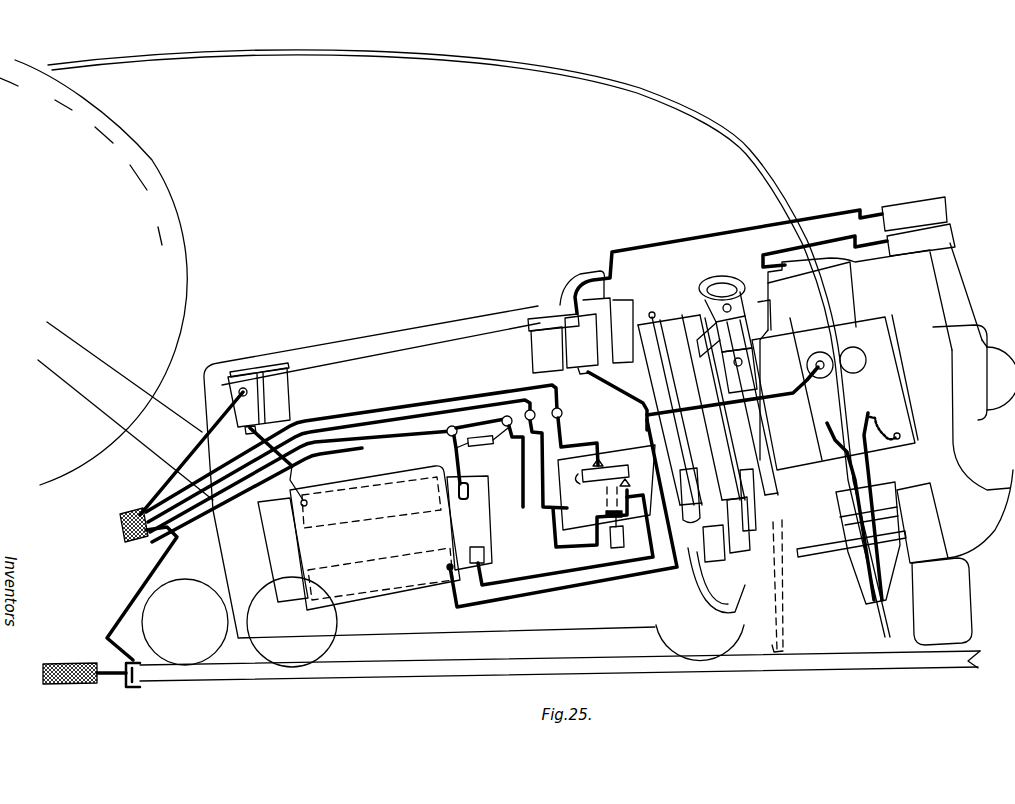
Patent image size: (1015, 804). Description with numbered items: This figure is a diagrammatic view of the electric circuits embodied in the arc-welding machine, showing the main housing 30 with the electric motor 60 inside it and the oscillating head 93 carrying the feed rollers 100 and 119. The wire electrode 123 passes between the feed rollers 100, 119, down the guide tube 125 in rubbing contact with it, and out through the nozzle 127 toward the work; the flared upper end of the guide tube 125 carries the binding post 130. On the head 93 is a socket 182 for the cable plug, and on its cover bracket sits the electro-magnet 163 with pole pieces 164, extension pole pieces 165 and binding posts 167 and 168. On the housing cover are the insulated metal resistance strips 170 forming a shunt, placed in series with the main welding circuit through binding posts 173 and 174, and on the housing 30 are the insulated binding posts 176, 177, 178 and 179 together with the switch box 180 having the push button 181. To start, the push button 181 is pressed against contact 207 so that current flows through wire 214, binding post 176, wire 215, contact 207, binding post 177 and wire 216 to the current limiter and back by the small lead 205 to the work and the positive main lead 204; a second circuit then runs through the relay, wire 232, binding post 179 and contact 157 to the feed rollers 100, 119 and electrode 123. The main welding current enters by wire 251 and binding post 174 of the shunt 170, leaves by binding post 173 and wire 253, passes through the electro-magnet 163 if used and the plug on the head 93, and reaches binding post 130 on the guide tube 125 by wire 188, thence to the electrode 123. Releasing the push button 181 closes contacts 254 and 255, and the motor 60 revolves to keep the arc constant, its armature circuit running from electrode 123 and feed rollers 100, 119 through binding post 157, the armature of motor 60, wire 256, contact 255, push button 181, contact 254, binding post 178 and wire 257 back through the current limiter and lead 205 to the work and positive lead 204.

The main housing 30 is at (550, 628).
The electric motor 60 is at (402, 473).
The oscillating head 93 is at (873, 318).
The feed roller 100 is at (819, 353).
The second serrated grooved roller 119 is at (858, 351).
The wire electrode 123 is at (757, 153).
The guide tube 125 is at (832, 443).
The nozzle 127 is at (845, 513).
The binding post 130 is at (880, 418).
The contact 157 is at (808, 362).
The electro-magnet 163 is at (985, 348).
The pole pieces 164 is at (955, 451).
The extension pole pieces 165 is at (958, 596).
The binding post 167 is at (938, 209).
The binding post 168 is at (940, 237).
The metal resistance strips 170 is at (420, 355).
The binding post 173 is at (589, 374).
The binding post 174 is at (246, 434).
The binding post 176 is at (563, 413).
The binding post 177 is at (534, 413).
The binding post 178 is at (502, 423).
The binding post 179 is at (447, 435).
The switch box 180 is at (642, 451).
The push button 181 is at (620, 545).
The socket 182 is at (754, 271).
The wire 188 is at (889, 421).
The positive main lead 204 is at (104, 662).
The small lead 205 is at (138, 595).
The contact 207 is at (604, 466).
The wire 214 is at (496, 394).
The wire 215 is at (567, 439).
The wire 216 is at (441, 405).
The wire 232 is at (363, 447).
The wire 251 is at (165, 492).
The wire 253 is at (674, 242).
The contact 254 is at (854, 246).
The contact 255 is at (568, 529).
The wire 256 is at (562, 513).
The wire 257 is at (373, 417).